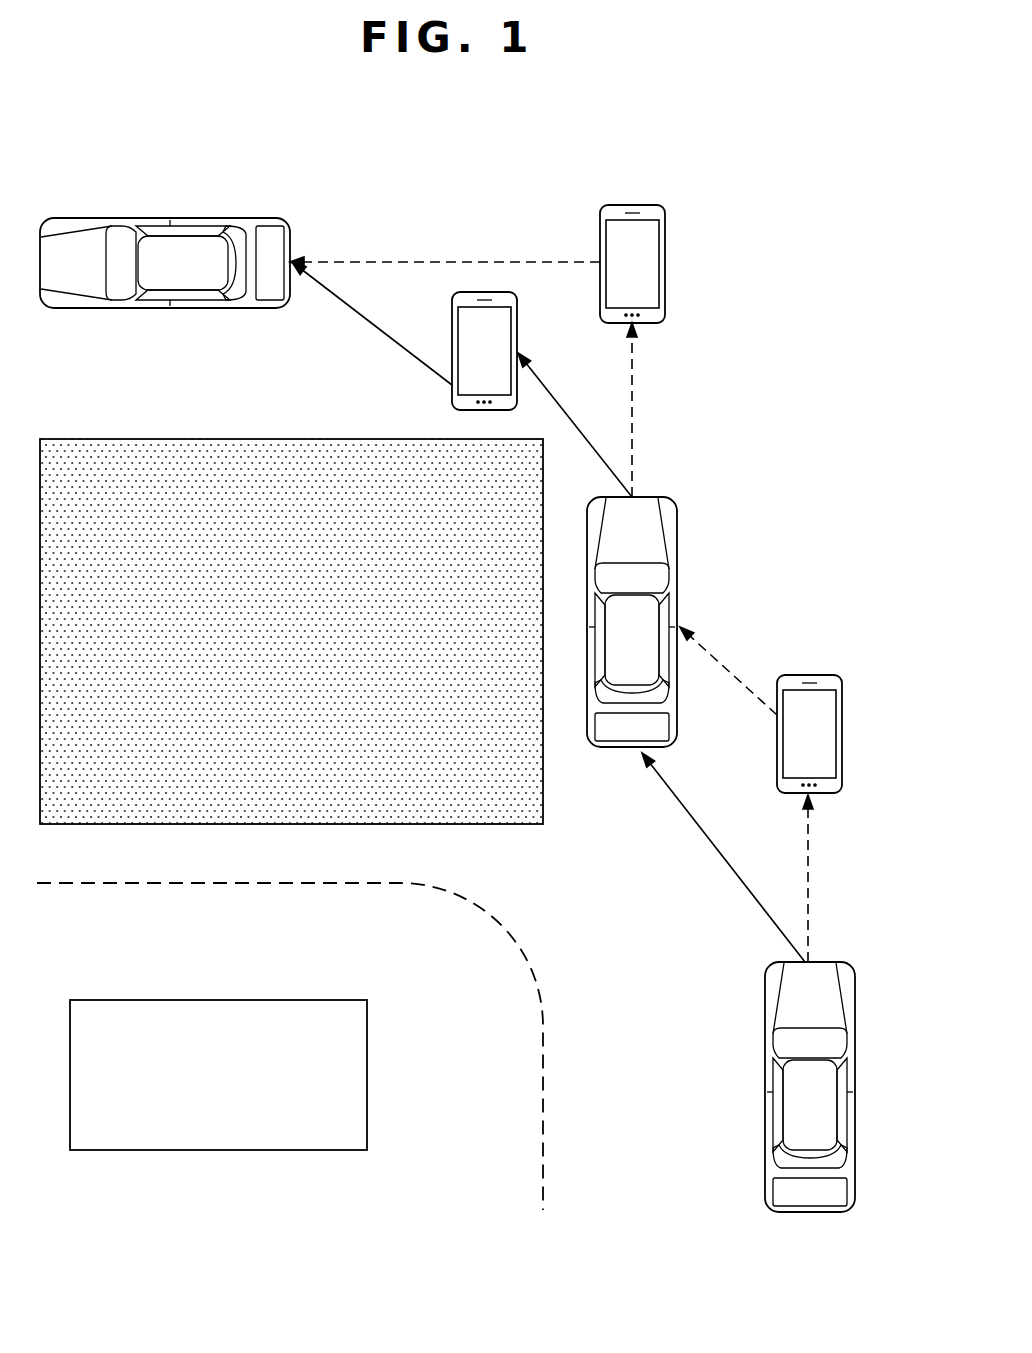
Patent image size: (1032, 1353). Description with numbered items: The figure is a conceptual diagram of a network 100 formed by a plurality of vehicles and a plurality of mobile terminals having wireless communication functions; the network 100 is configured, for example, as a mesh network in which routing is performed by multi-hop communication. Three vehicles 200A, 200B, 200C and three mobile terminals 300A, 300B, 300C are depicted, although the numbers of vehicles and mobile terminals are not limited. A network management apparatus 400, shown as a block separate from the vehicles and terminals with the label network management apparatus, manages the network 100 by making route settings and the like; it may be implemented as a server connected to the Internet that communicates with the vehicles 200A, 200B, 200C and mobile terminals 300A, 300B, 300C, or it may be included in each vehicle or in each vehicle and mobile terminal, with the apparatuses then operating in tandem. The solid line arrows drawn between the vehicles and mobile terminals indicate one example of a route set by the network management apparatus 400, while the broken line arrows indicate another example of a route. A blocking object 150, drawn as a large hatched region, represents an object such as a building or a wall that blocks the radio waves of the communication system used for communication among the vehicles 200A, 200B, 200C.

The network 100 is at (453, 196).
The blocking object 150 is at (97, 439).
The vehicle 200A is at (765, 1078).
The vehicle 200B is at (678, 526).
The vehicle 200C is at (157, 218).
The mobile terminal 300A is at (810, 675).
The mobile terminal 300B is at (443, 351).
The mobile terminal 300C is at (630, 205).
The network management apparatus 400 is at (292, 1000).